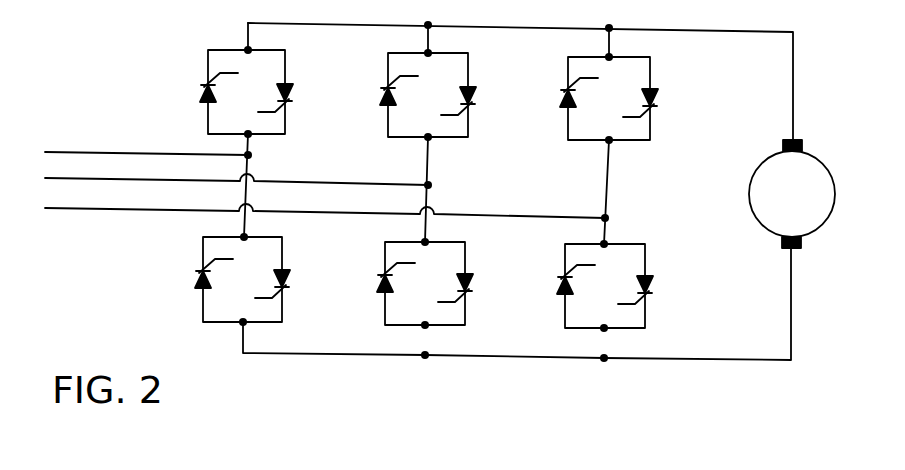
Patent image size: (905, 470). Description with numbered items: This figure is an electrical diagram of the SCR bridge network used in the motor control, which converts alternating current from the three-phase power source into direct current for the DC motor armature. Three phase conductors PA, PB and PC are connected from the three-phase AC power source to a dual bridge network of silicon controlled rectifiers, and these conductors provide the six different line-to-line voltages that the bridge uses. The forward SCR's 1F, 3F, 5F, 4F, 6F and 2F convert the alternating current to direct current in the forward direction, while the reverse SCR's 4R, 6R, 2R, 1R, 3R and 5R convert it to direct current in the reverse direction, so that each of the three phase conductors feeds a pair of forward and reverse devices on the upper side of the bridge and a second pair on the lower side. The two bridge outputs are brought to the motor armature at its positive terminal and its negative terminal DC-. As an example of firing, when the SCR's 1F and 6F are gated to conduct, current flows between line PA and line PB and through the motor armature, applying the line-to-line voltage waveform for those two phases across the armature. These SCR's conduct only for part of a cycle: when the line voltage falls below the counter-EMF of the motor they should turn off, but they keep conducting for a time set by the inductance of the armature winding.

The forward SCR 1F is at (205, 89).
The reverse SCR 4R is at (293, 98).
The forward SCR 3F is at (385, 93).
The reverse SCR 6R is at (475, 100).
The forward SCR 5F is at (565, 95).
The reverse SCR 2R is at (656, 102).
The forward SCR 4F is at (200, 275).
The reverse SCR 1R is at (291, 283).
The forward SCR 6F is at (380, 278).
The reverse SCR 3R is at (473, 287).
The forward SCR 2F is at (562, 280).
The reverse SCR 5R is at (653, 288).
The phase conductor PA is at (146, 140).
The phase conductor PB is at (236, 169).
The phase conductor PC is at (325, 200).
The DC negative motor terminal DC- is at (816, 249).